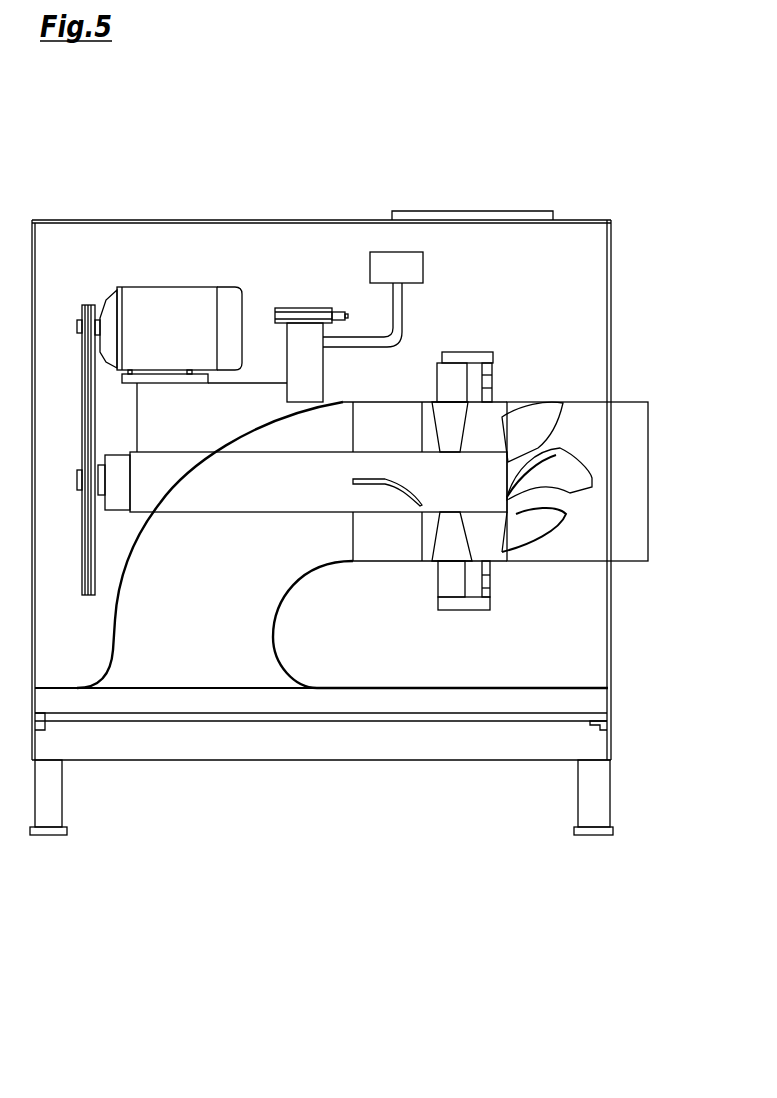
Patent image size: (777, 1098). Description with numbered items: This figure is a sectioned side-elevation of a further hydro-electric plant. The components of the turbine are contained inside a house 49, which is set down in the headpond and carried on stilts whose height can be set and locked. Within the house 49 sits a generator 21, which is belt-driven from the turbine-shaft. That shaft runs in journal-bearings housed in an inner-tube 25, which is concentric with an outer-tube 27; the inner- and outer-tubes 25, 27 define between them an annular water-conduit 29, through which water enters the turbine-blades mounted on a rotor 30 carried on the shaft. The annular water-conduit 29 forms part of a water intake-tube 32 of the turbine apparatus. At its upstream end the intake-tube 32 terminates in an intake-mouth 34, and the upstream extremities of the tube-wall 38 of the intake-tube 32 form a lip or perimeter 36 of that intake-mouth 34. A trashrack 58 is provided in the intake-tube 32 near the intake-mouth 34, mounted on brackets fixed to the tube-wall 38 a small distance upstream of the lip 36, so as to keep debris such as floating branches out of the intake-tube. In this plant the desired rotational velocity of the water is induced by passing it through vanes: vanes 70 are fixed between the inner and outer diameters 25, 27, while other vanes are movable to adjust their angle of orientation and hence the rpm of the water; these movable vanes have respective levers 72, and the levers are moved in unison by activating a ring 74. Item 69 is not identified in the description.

The generator 21 is at (163, 320).
The inner-tube 25 is at (325, 450).
The outer-tube 27 is at (407, 402).
The annular water-conduit 29 is at (483, 426).
The rotor 30 is at (572, 493).
The water intake-tube 32 is at (230, 671).
The intake-mouth 34 is at (308, 752).
The lip or perimeter 36 is at (223, 760).
The tube-wall 38 is at (133, 548).
The house 49 is at (265, 220).
The trashrack 58 is at (453, 717).
The impeller blade 69 is at (353, 480).
The vanes 70 is at (443, 540).
The levers 72 is at (467, 605).
The ring 74 is at (490, 585).